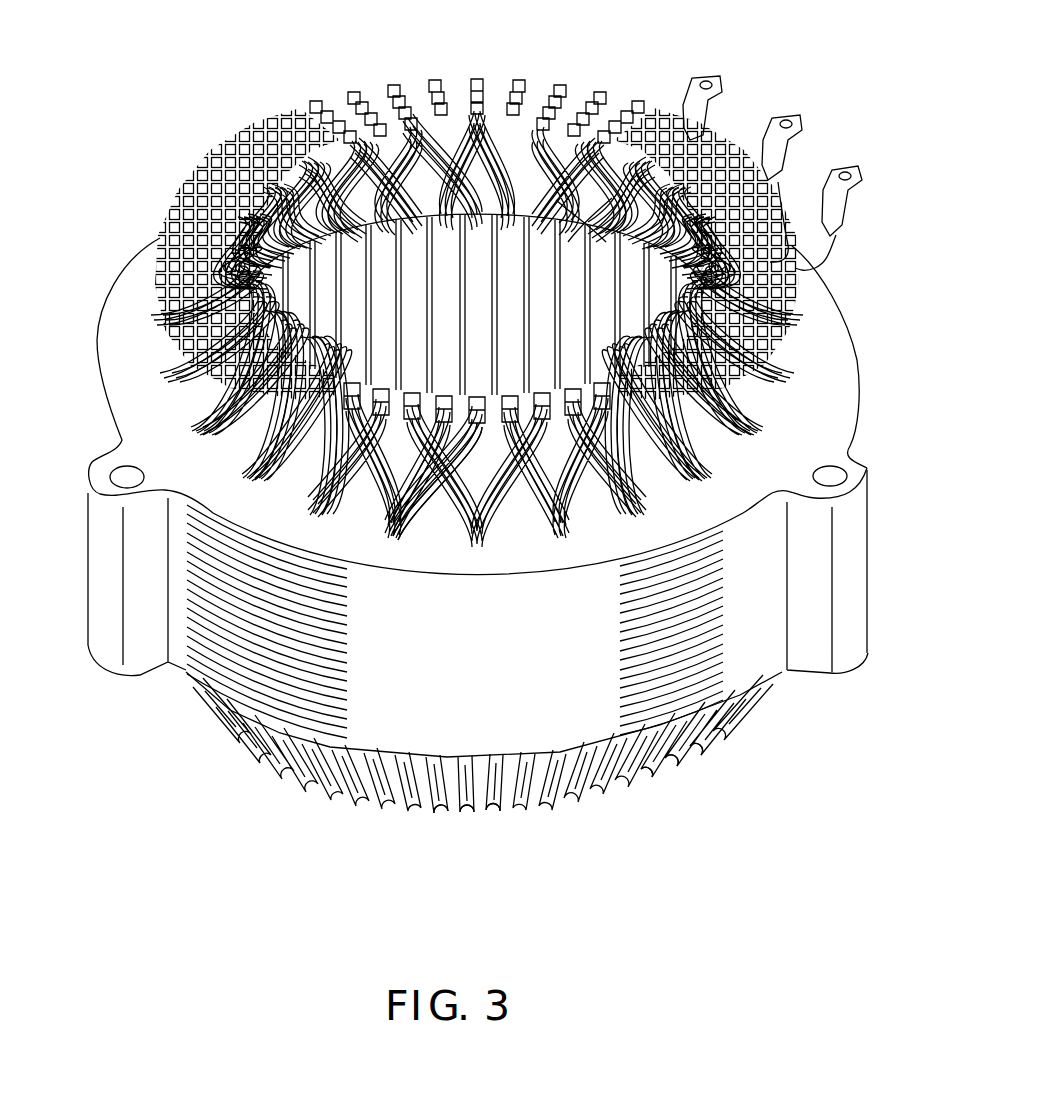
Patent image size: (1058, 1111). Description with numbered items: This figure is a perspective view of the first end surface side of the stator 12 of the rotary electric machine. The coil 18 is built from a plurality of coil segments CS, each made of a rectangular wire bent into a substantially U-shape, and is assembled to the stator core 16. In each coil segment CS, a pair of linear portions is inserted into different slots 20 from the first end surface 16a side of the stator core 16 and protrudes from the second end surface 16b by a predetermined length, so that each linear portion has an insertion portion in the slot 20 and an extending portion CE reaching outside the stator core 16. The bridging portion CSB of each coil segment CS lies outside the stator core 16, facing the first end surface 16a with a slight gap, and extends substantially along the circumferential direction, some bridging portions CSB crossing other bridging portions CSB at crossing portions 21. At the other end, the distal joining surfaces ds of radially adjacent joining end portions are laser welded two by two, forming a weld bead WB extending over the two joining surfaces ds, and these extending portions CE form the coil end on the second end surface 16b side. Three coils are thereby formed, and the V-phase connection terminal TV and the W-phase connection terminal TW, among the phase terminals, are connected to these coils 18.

The stator 12 is at (128, 212).
The stator core 16 is at (356, 681).
The first end surface 16a is at (222, 738).
The second end surface 16b is at (123, 326).
The coil 18 is at (175, 184).
The slot 20 is at (435, 240).
The crossing portion 21 is at (607, 240).
The weld bead WB is at (242, 146).
The joining surface ds is at (479, 78).
The W-phase connection terminal TW is at (703, 76).
The V-phase connection terminal TV is at (798, 127).
The extending portion CE is at (556, 520).
The coil segment CS is at (408, 805).
The bridging portion CSB is at (505, 797).